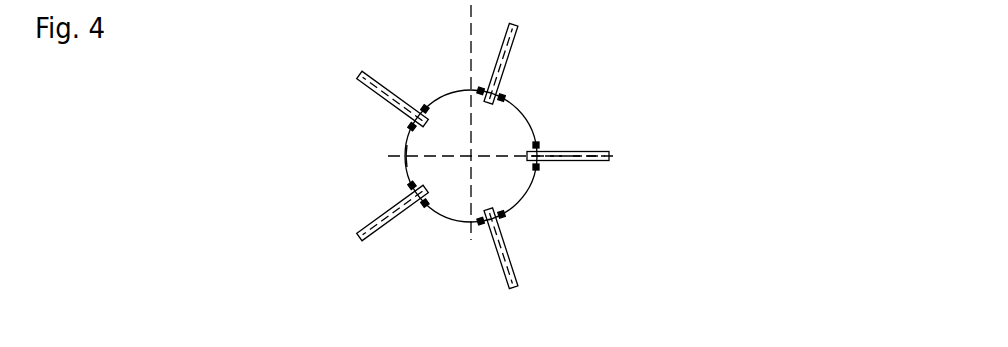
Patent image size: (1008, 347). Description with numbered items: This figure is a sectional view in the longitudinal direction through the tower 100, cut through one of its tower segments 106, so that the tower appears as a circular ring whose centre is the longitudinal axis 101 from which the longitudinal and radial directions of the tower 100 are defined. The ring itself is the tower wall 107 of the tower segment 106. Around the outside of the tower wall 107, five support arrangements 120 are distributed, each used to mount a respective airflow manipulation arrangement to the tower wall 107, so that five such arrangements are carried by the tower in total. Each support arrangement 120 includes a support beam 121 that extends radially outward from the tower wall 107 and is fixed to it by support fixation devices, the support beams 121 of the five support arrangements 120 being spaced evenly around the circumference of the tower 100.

The tower 100 is at (762, 50).
The longitudinal axis 101 is at (452, 0).
The tower segment 106 is at (316, 135).
The tower wall 107 is at (405, 167).
The support arrangement 120 is at (538, 53).
The support beam 121 is at (583, 152).